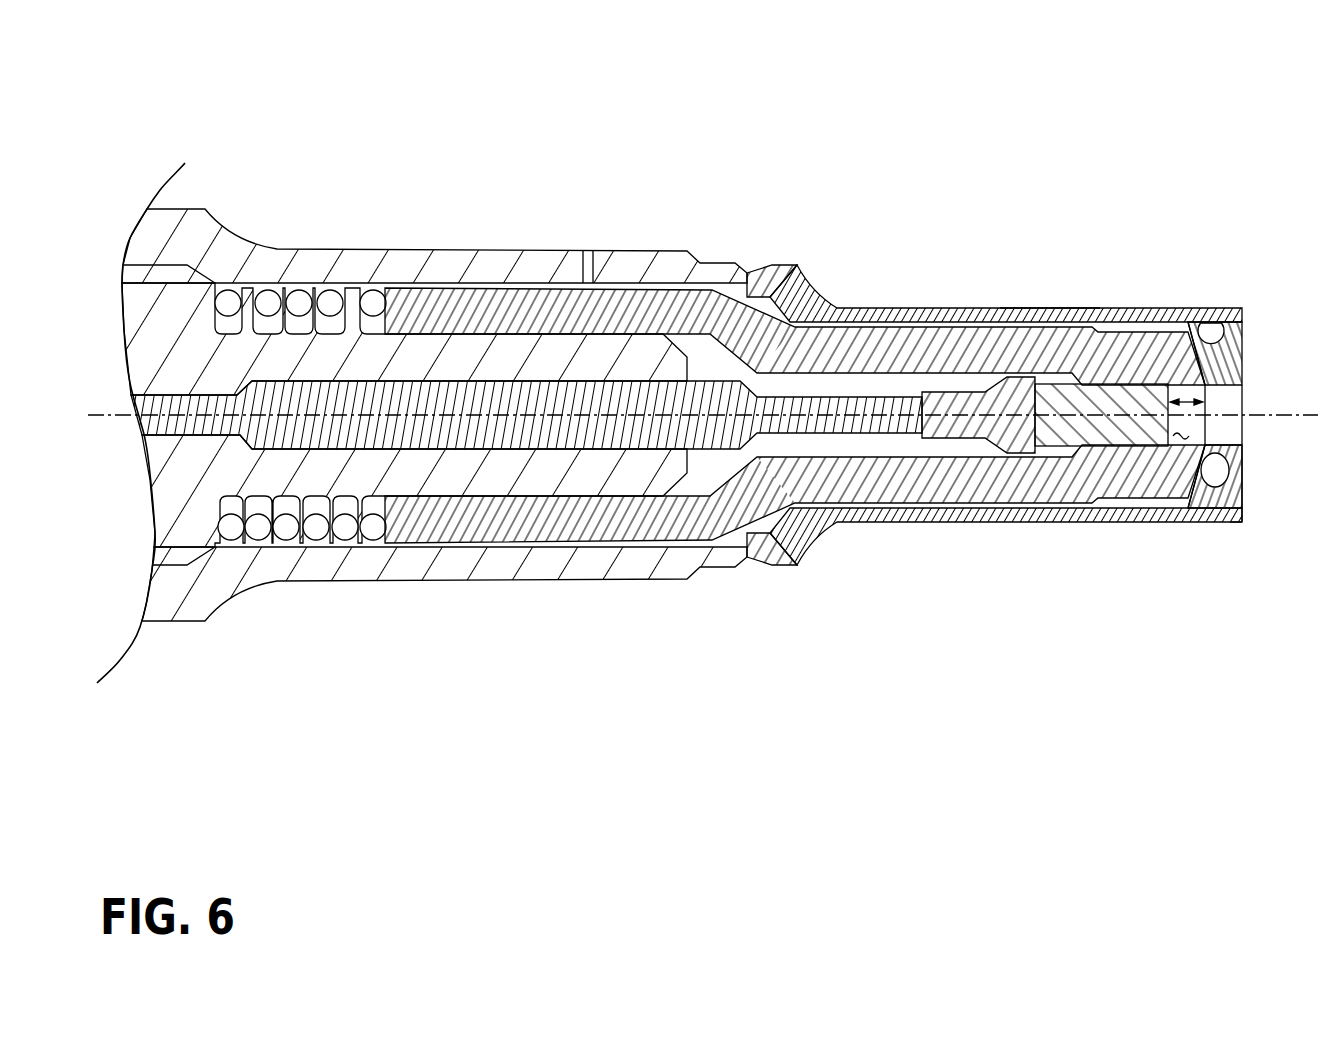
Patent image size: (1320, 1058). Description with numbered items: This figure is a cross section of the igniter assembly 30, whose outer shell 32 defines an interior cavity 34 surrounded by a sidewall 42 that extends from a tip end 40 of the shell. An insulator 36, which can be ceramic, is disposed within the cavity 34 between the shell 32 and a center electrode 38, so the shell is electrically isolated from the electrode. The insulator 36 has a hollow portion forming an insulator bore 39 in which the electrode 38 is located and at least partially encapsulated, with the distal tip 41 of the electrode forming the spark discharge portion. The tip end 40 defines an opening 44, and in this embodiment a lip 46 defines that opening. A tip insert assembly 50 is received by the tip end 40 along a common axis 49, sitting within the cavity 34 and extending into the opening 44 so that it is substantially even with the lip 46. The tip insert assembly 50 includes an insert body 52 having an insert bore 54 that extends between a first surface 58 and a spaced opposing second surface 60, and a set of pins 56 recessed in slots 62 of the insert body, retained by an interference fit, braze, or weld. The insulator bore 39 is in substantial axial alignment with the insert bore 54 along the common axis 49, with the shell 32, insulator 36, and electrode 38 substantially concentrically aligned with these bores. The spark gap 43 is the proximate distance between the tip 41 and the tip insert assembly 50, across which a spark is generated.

The igniter assembly 30 is at (490, 43).
The shell 32 is at (988, 303).
The cavity 34 is at (796, 268).
The insulator 36 is at (857, 350).
The electrode 38 is at (1085, 432).
The insulator bore 39 is at (1181, 440).
The tip end 40 is at (1247, 536).
The tip 41 is at (1232, 415).
The sidewall 42 is at (1053, 312).
The spark gap 43 is at (1203, 385).
The opening 44 is at (1245, 478).
The lip 46 is at (1244, 500).
The common axis 49 is at (190, 415).
The tip insert assembly 50 is at (1248, 358).
The insert body 52 is at (1207, 496).
The insert bore 54 is at (1234, 438).
The pins 56 is at (1214, 482).
The first surface 58 is at (1244, 461).
The second surface 60 is at (1183, 400).
The slots 62 is at (1215, 326).